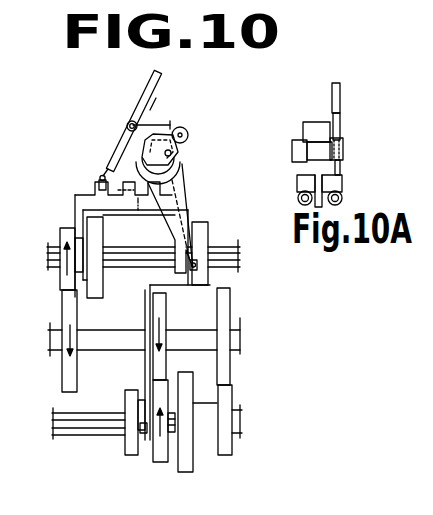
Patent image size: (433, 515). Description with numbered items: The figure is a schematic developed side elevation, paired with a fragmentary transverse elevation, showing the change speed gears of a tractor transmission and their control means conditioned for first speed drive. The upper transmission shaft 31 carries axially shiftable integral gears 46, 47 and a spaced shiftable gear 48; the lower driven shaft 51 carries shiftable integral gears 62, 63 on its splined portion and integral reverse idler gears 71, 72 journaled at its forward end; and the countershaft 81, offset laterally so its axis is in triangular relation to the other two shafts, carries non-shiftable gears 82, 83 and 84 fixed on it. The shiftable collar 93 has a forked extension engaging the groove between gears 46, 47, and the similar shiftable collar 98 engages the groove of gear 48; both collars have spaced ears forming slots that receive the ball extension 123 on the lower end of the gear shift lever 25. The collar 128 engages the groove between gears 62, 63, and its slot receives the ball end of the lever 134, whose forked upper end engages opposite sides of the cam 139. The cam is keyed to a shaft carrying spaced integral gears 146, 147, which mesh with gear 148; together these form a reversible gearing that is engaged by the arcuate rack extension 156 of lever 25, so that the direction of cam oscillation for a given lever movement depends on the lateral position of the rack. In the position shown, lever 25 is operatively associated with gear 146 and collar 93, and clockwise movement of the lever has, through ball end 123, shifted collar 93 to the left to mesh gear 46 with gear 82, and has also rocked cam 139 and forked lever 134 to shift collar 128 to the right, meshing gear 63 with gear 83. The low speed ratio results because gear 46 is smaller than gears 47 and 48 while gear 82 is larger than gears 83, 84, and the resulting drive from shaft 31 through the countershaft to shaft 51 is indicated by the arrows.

In FIG. 10, the gear shift lever 25 is at (160, 82).
In FIG. 10A, the gear shift lever 25 is at (377, 110).
In FIG. 10, the arcuate rack extension 156 is at (152, 107).
In FIG. 10, the ball extension 123 is at (101, 176).
In FIG. 10, the cam 139 is at (157, 139).
In FIG. 10, the gear 148 is at (184, 132).
In FIG. 10A, the gear 148 is at (318, 122).
In FIG. 10, the gear 146 is at (172, 152).
In FIG. 10A, the gear 146 is at (344, 150).
In FIG. 10, the lever 134 is at (238, 162).
In FIG. 10, the shiftable collar 98 is at (175, 185).
In FIG. 10A, the shiftable collar 98 is at (300, 188).
In FIG. 10, the shiftable collar 93 is at (83, 197).
In FIG. 10A, the shiftable collar 93 is at (384, 195).
In FIG. 10, the shiftable integral gear 47 is at (95, 230).
In FIG. 10, the shiftable gear 48 is at (200, 222).
In FIG. 10, the shiftable integral gear 46 is at (67, 227).
In FIG. 10, the gear 82 is at (63, 305).
In FIG. 10, the upper transmission shaft 31 is at (280, 259).
In FIG. 10, the collar 128 is at (148, 283).
In FIG. 10, the gear 83 is at (165, 305).
In FIG. 10, the integral gear 63 is at (162, 462).
In FIG. 10, the gear 84 is at (228, 307).
In FIG. 10, the reverse idler gear 72 is at (230, 456).
In FIG. 10, the reverse idler gear 71 is at (190, 473).
In FIG. 10, the integral gear 62 is at (131, 456).
In FIG. 10, the countershaft 81 is at (239, 335).
In FIG. 10, the lower transmission driven shaft 51 is at (241, 417).
In FIG. 10A, the gear 147 is at (293, 152).